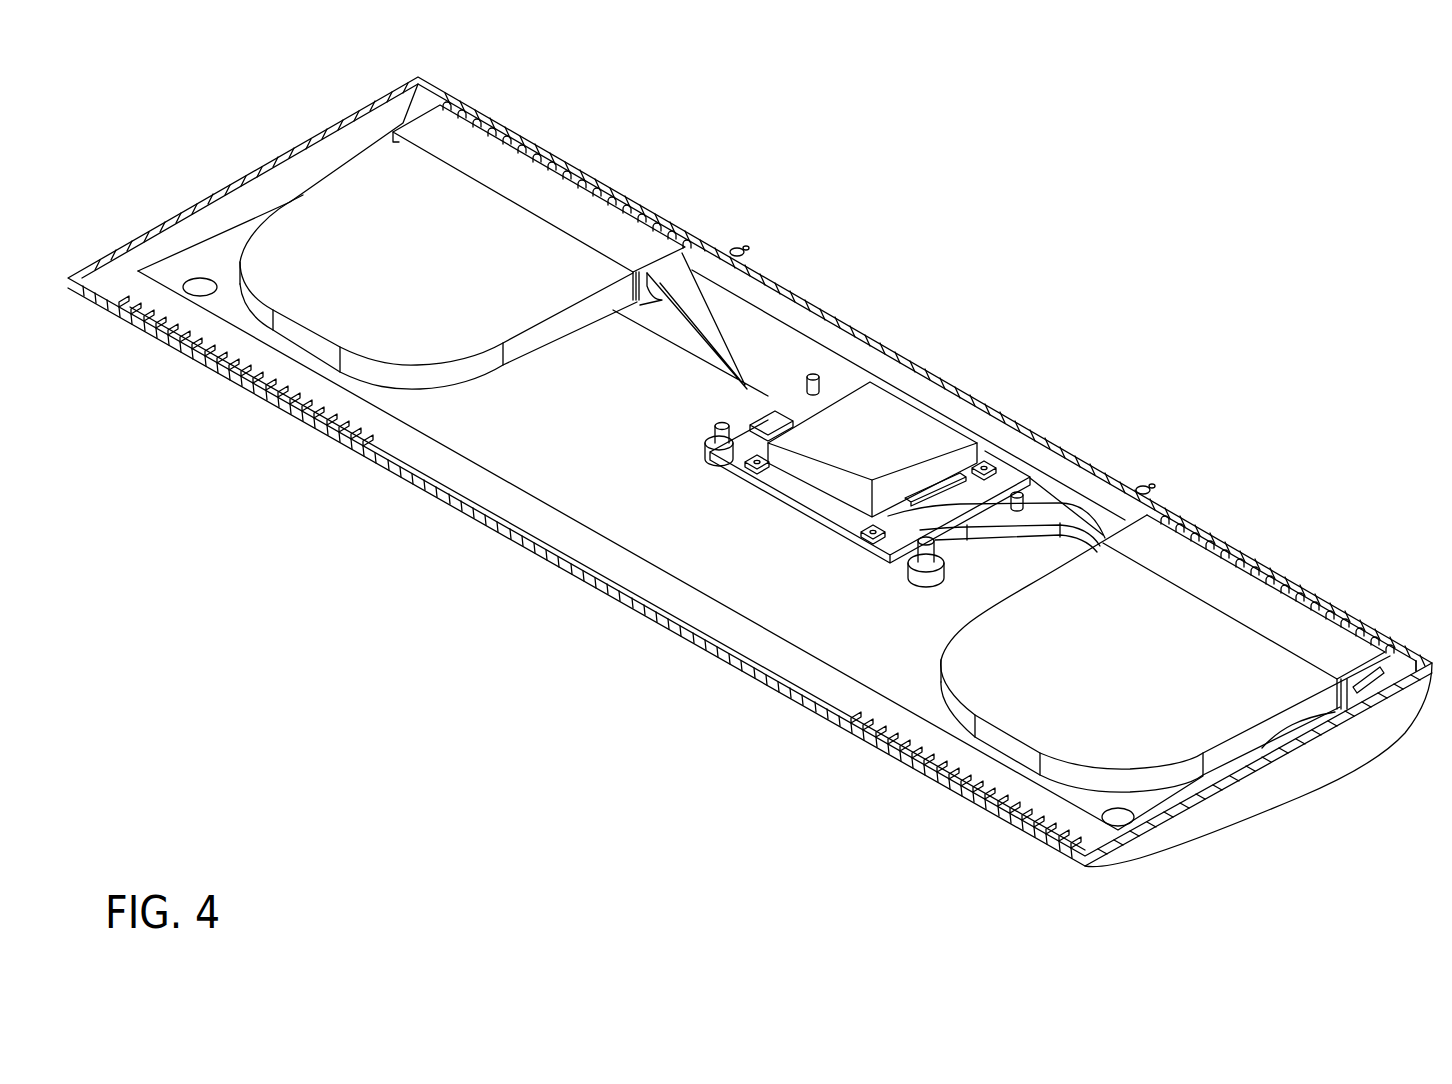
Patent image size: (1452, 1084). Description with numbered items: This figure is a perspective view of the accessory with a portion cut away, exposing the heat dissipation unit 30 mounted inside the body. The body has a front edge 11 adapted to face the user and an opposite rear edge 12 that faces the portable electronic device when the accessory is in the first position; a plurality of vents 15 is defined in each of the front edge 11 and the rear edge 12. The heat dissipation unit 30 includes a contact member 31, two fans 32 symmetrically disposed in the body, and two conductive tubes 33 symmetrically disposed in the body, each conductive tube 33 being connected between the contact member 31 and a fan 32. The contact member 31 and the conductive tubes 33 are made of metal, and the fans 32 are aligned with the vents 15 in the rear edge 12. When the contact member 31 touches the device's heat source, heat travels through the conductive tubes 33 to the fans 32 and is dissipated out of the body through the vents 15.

The front edge 11 is at (558, 573).
The rear edge 12 is at (1027, 425).
The vents 15 is at (585, 178).
The heat dissipation unit 30 is at (887, 403).
The contact member 31 is at (930, 430).
The fan 32 is at (533, 180).
The conductive tube 33 is at (745, 348).